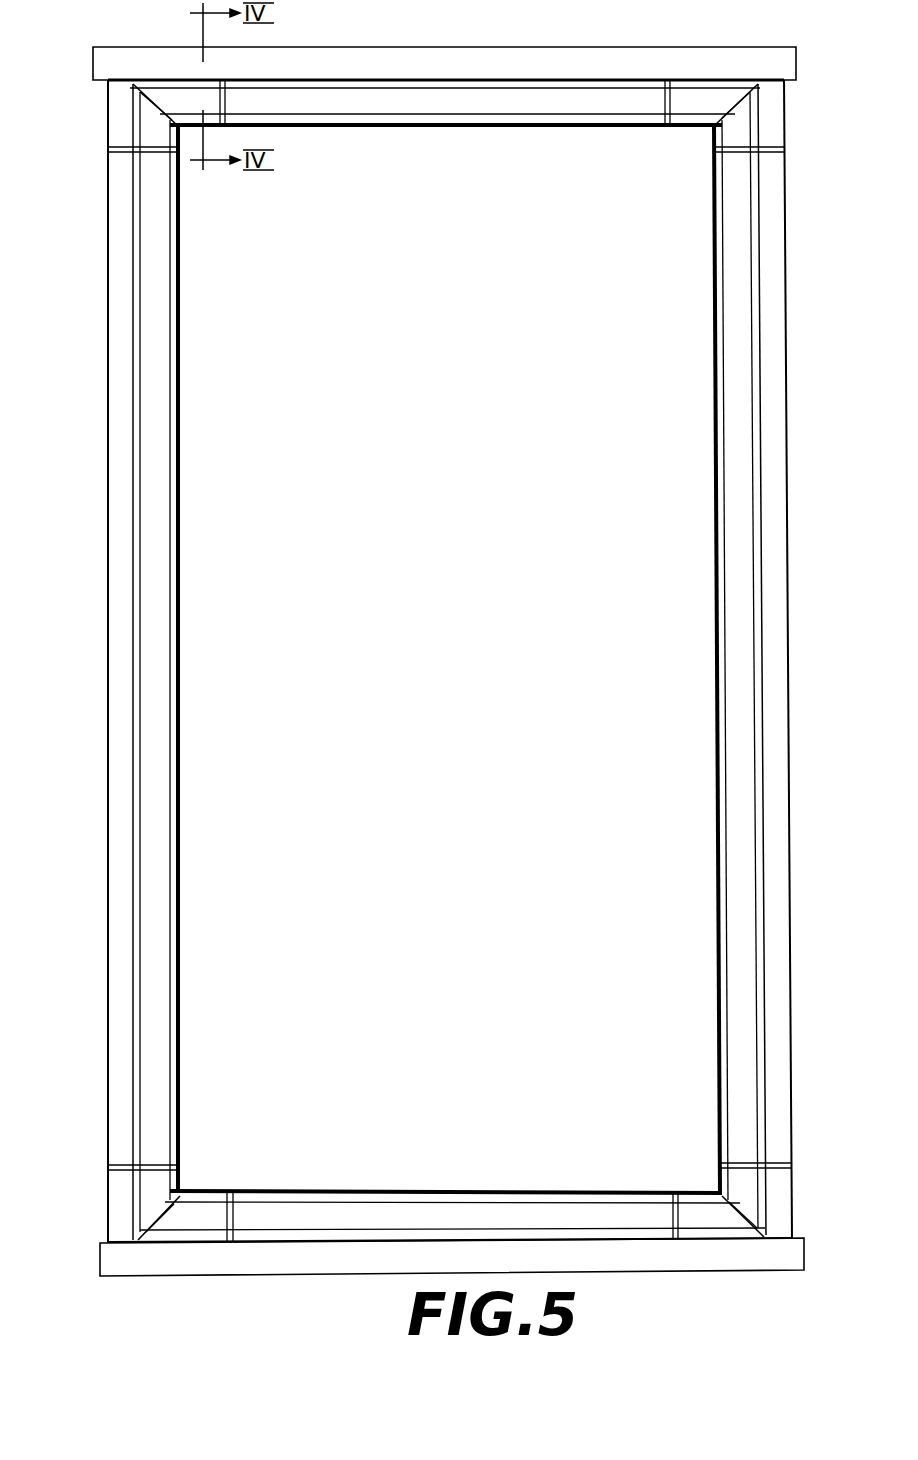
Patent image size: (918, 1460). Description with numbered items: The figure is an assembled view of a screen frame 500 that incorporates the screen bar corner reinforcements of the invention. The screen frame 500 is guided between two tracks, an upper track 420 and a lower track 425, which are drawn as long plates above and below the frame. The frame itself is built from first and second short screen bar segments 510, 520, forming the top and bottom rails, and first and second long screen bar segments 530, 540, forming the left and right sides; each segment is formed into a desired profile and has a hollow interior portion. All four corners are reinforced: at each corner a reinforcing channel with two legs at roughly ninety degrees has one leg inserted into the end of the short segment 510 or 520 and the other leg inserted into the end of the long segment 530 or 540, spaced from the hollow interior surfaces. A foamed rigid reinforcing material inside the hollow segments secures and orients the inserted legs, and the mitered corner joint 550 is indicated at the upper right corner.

The track 420 is at (724, 40).
The track 425 is at (672, 1280).
The screen frame 500 is at (420, 661).
The first short screen bar segment 510 is at (461, 140).
The second short screen bar segment 520 is at (411, 1177).
The first long screen bar segment 530 is at (192, 910).
The second long screen bar segment 540 is at (703, 652).
The corner joint 550 is at (700, 140).